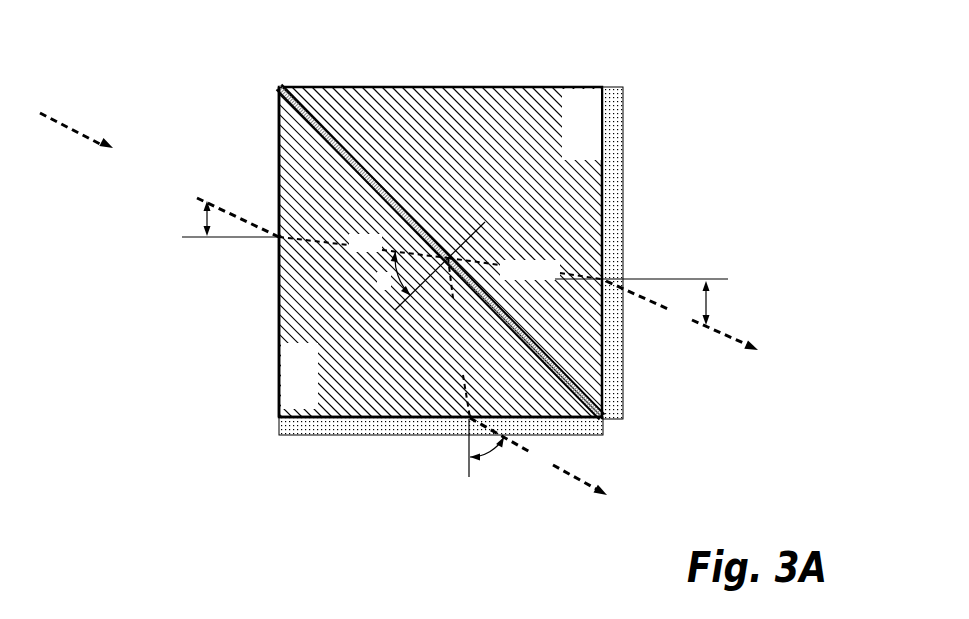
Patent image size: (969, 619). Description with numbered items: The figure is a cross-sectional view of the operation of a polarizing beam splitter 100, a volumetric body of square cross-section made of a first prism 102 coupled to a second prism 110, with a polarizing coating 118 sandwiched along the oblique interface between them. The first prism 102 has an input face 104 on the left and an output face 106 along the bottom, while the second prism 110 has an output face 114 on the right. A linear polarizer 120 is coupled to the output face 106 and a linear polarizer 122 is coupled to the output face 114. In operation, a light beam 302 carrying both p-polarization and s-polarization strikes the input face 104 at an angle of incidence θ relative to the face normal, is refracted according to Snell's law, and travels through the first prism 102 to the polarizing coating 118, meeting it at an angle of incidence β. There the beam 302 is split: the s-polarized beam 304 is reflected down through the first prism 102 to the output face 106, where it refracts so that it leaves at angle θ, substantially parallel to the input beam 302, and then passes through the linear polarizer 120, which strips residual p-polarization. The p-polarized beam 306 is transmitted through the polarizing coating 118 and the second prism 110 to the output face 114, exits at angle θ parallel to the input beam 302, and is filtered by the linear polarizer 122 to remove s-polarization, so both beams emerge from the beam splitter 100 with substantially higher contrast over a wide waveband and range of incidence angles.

The polarizing beam splitter 100 is at (707, 71).
The first prism 102 is at (317, 385).
The input face 104 is at (279, 380).
The output face 106 is at (312, 417).
The second prism 110 is at (591, 138).
The output face 114 is at (602, 135).
The polarizing coating 118 is at (333, 133).
The linear polarizer 120 is at (412, 425).
The linear polarizer 122 is at (610, 240).
The light beam 302 is at (244, 185).
The s-polarized beam 304 is at (523, 376).
The p-polarized beam 306 is at (567, 286).